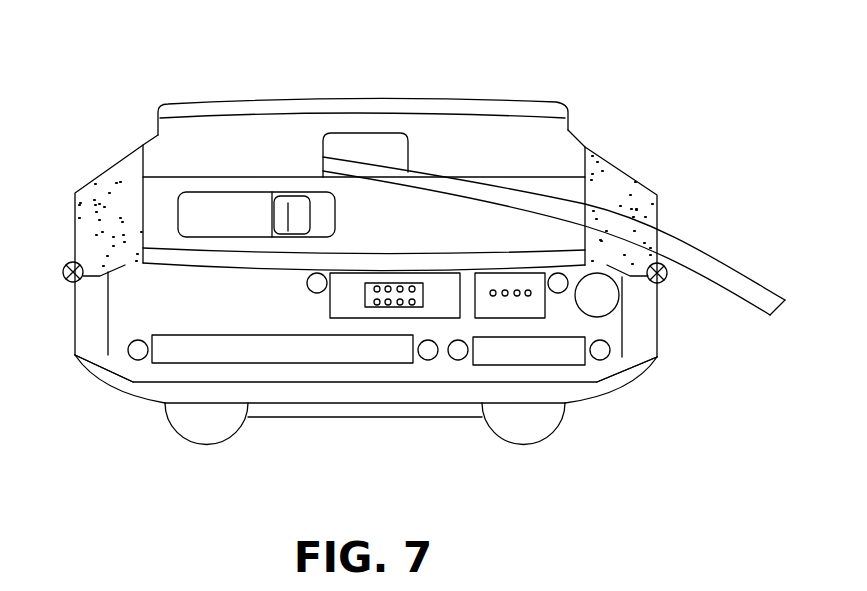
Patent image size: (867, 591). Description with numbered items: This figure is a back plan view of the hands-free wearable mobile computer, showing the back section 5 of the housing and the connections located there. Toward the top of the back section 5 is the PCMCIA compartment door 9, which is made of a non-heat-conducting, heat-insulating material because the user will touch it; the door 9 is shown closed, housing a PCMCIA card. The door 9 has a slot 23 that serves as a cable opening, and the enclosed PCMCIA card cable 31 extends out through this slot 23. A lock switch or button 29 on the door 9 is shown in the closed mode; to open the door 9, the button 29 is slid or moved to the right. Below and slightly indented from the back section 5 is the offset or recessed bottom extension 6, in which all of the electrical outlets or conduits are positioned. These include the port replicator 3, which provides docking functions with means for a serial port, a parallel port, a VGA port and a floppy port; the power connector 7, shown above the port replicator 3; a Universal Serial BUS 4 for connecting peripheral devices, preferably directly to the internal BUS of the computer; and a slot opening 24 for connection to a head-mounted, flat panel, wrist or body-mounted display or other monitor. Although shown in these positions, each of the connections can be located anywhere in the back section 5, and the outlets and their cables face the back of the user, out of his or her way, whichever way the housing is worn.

The port replicator 3 is at (257, 353).
The Universal Serial BUS 4 is at (533, 310).
The back section 5 is at (163, 210).
The bottom extension 6 is at (125, 315).
The power connector 7 is at (422, 312).
The PCMCIA compartment door 9 is at (250, 97).
The slot 23 is at (380, 143).
The slot opening 24 is at (562, 352).
The lock switch or button 29 is at (247, 207).
The PCMCIA card cable 31 is at (765, 280).